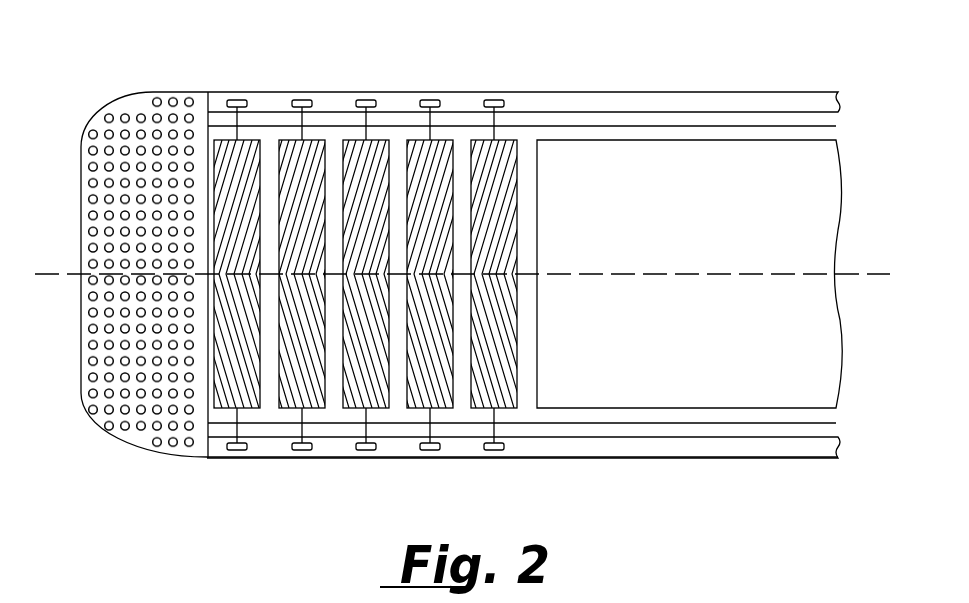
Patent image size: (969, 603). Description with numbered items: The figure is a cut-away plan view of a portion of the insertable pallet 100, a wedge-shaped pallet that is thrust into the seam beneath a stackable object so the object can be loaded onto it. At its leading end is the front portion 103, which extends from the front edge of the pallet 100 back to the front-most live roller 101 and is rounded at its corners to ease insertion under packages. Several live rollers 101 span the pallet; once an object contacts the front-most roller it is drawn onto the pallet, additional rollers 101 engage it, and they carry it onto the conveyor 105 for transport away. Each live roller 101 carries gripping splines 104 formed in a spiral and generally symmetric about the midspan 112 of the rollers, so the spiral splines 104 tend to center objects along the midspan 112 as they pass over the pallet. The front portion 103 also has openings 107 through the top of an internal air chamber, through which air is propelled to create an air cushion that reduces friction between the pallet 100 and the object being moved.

The insertable pallet 100 is at (580, 46).
The live roller 101 is at (423, 383).
The front portion 103 is at (168, 453).
The gripping spline 104 is at (320, 190).
The conveyor 105 is at (705, 167).
The air opening 107 is at (128, 398).
The midspan 112 is at (712, 274).